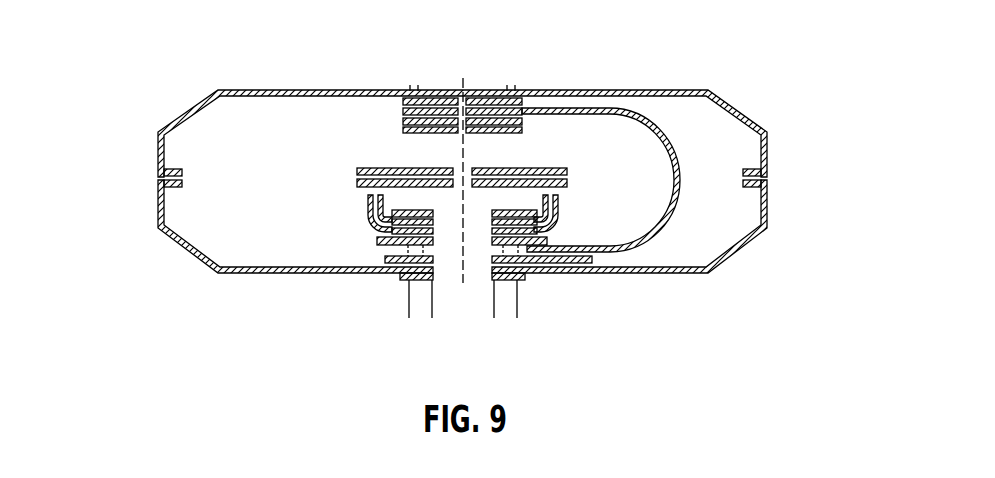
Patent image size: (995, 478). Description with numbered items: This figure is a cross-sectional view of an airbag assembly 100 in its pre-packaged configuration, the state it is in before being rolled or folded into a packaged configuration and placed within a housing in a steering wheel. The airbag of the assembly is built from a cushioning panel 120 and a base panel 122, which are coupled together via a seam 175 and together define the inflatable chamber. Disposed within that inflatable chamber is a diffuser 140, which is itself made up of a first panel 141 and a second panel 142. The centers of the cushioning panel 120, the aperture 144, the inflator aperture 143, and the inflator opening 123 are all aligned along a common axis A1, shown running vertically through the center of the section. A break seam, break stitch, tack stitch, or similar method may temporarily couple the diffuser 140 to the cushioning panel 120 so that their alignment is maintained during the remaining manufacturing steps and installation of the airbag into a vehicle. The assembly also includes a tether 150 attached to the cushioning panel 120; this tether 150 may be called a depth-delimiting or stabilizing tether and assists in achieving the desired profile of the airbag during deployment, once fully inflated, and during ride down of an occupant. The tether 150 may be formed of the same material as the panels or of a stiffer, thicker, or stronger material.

The airbag assembly 100 is at (133, 45).
The cushioning panel 120 is at (272, 90).
The base panel 122 is at (288, 273).
The seam 175 is at (762, 178).
The axis A1 is at (462, 150).
The aperture 144 is at (467, 165).
The diffuser 140 is at (368, 158).
The second panel 142 is at (563, 168).
The tether 150 is at (668, 140).
The inflator aperture 143 is at (453, 238).
The first panel 141 is at (540, 238).
The inflator opening 123 is at (473, 291).